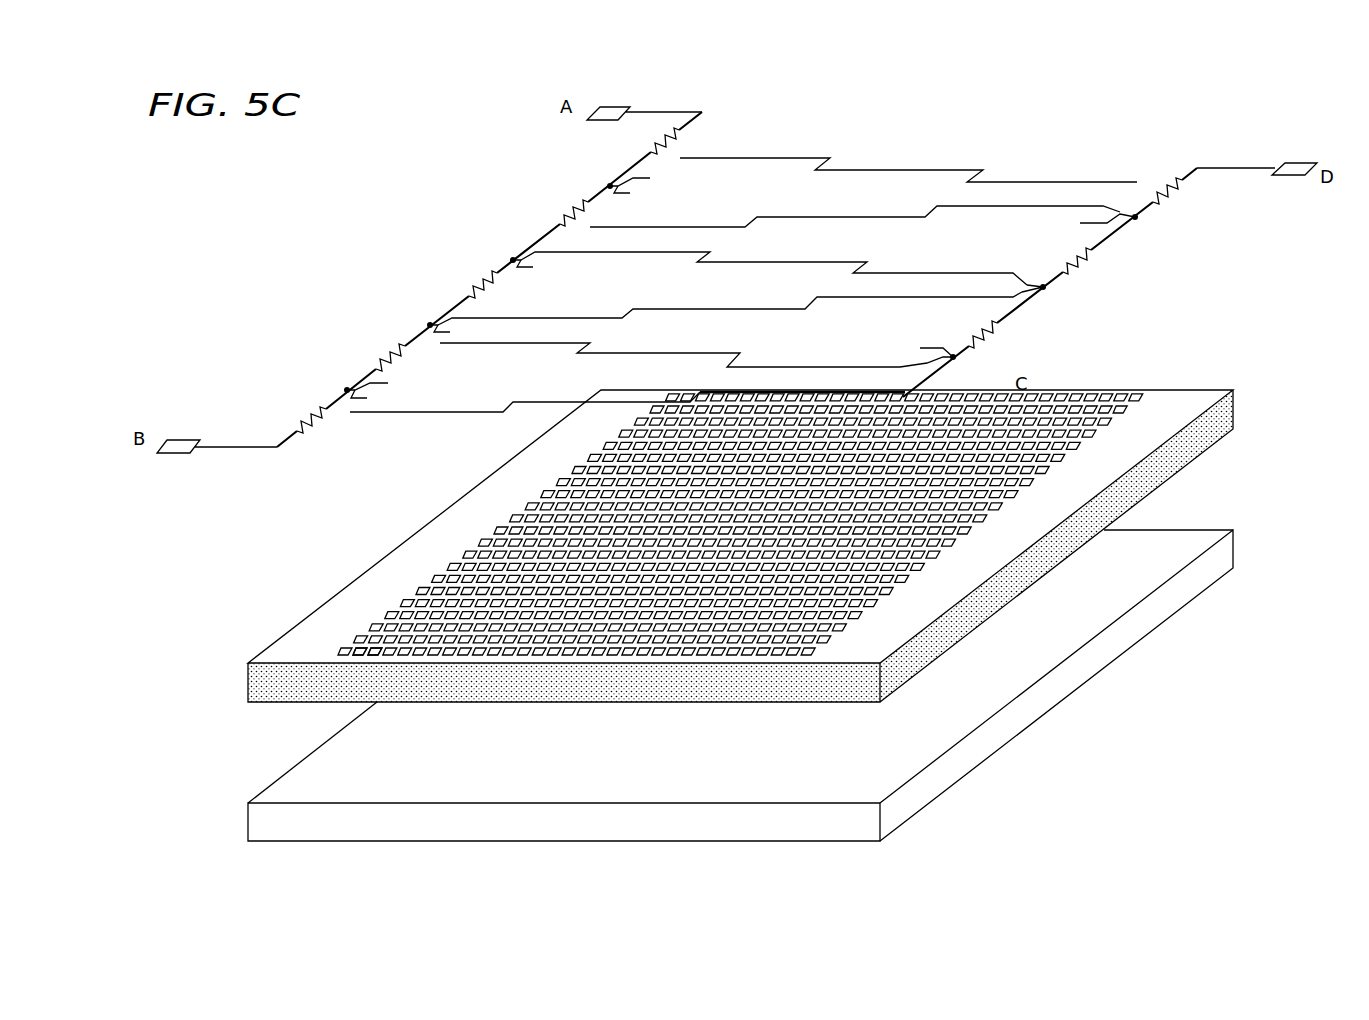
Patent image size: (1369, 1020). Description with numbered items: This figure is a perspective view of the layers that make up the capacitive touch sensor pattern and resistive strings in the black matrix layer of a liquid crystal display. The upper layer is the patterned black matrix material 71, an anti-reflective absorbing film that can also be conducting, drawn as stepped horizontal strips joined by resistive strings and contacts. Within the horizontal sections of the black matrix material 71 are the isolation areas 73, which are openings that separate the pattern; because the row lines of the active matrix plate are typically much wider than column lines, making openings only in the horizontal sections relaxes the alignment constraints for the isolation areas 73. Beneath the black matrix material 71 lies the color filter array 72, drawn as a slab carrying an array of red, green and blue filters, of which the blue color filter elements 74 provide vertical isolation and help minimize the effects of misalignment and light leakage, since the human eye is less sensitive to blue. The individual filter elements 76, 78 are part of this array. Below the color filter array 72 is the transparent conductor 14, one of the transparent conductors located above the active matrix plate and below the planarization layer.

The transparent conductor 14 is at (945, 780).
The black matrix material 71 is at (742, 178).
The color filter array 72 is at (1060, 550).
The isolation area 73 is at (1048, 212).
The blue color filter element 74 is at (317, 662).
The pixel element 76 is at (363, 655).
The pixel element 78 is at (383, 655).